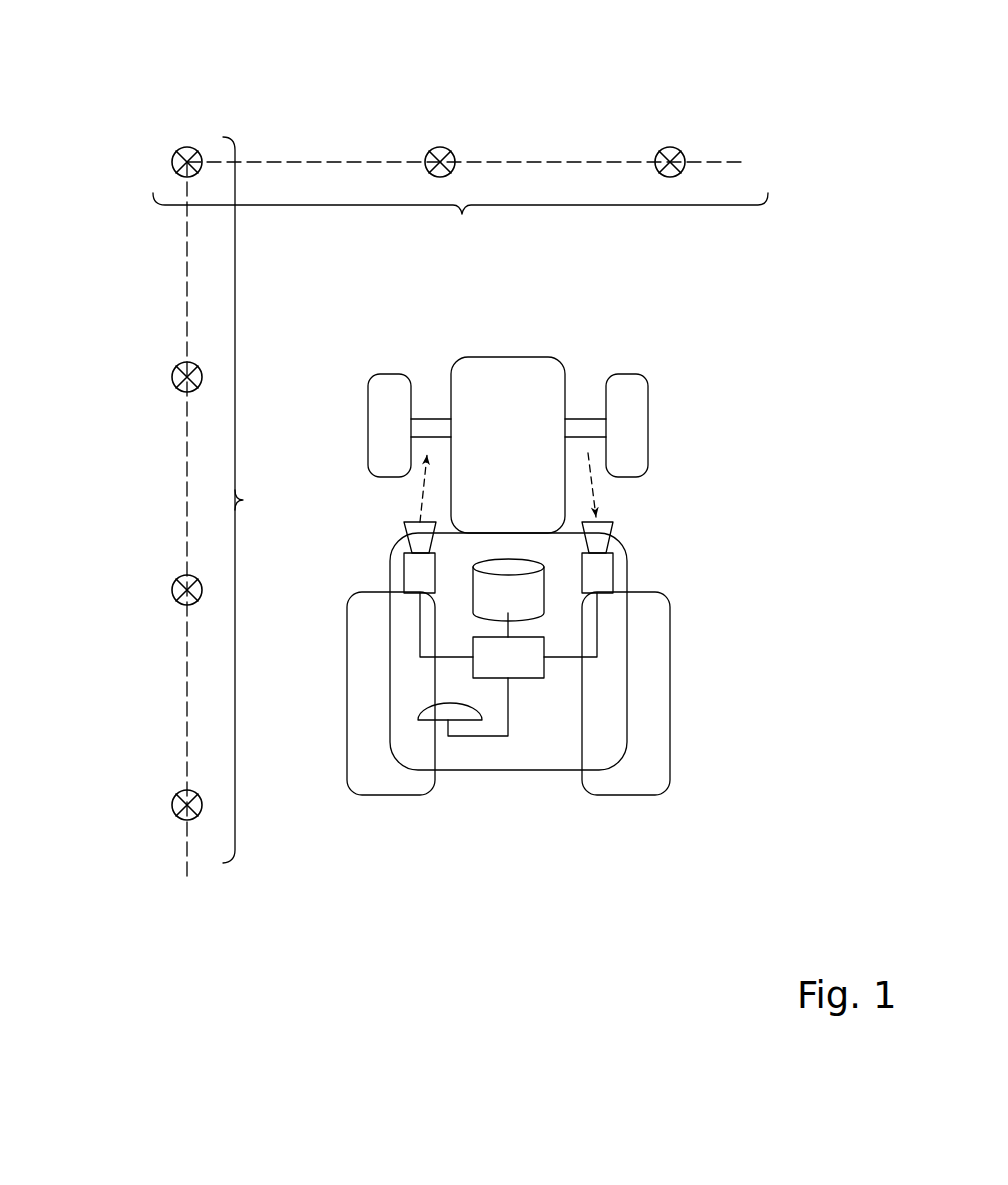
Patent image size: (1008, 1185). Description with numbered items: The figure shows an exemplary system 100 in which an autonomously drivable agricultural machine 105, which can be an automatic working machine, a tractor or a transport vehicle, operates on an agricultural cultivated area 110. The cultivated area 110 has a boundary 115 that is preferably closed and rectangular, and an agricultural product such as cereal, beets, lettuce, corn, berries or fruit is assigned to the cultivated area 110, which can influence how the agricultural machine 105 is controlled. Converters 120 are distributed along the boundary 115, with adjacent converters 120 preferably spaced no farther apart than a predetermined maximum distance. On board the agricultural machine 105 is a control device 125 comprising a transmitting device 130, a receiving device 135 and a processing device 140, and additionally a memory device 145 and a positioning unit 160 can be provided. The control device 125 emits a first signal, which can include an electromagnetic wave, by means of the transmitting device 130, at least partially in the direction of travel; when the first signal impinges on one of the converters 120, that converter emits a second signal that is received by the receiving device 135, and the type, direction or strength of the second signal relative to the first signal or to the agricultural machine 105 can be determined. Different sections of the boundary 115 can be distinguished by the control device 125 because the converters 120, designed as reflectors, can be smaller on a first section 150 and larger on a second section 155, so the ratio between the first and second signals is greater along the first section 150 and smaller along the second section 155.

The system 100 is at (772, 110).
The agricultural machine 105 is at (565, 362).
The cultivated area 110 is at (725, 257).
The boundary 115 is at (293, 158).
The converters 120 is at (183, 147).
The control device 125 is at (527, 720).
The transmitting device 130 is at (404, 573).
The receiving device 135 is at (613, 573).
The processing device 140 is at (544, 670).
The memory device 145 is at (544, 602).
The first section 150 is at (462, 214).
The second section 155 is at (243, 500).
The positioning unit 160 is at (417, 719).